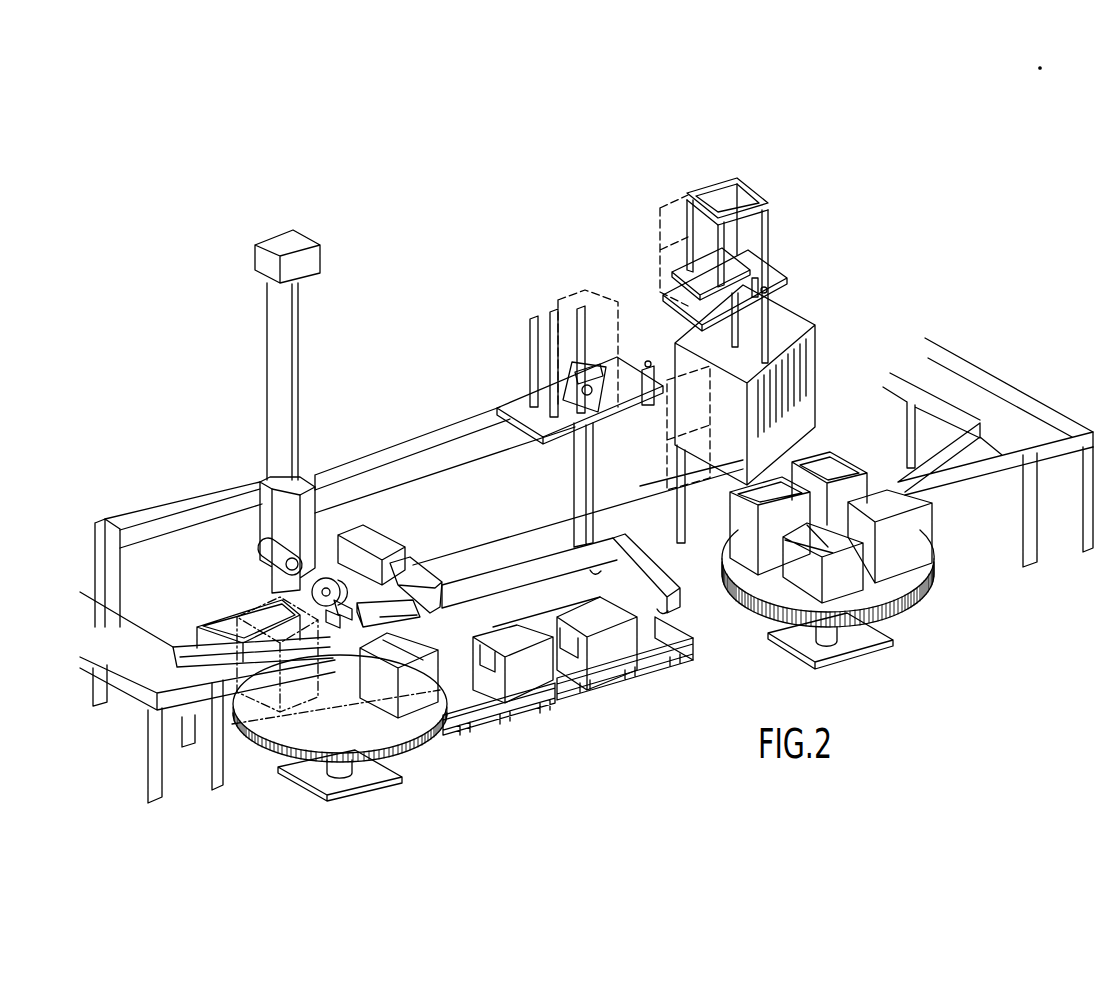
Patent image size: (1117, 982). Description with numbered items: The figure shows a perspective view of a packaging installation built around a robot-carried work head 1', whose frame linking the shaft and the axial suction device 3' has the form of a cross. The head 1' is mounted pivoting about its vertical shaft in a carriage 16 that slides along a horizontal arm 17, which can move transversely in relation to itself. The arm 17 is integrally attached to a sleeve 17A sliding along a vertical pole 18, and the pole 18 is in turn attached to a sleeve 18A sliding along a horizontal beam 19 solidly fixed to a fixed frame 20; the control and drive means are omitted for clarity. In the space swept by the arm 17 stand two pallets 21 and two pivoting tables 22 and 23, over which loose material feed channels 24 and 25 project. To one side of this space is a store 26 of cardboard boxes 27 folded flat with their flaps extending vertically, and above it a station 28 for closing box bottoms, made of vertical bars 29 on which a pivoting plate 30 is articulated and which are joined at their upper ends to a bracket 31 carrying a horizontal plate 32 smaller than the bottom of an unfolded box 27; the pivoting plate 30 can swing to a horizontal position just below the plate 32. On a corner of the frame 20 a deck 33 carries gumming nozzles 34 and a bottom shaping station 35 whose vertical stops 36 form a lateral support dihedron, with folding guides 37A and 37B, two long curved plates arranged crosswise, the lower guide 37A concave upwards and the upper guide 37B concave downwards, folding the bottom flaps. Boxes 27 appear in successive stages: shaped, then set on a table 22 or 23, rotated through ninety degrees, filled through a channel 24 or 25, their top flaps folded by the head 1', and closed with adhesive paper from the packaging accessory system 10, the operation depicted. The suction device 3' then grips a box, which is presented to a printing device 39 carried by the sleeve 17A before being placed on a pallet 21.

The work head 1' is at (418, 541).
The axial suction device 3' is at (415, 616).
The packaging accessory system 10 is at (320, 613).
The carriage 16 is at (367, 531).
The horizontal arm 17 is at (331, 506).
The sleeve 17A is at (258, 500).
The vertical pole 18 is at (299, 406).
The sleeve 18A is at (232, 612).
The horizontal beam 19 is at (488, 608).
The fixed frame 20 is at (572, 482).
The pallets 21 is at (548, 708).
The pivoting table 22 is at (395, 752).
The pivoting table 23 is at (845, 610).
The loose material feed channel 24 is at (224, 698).
The loose material feed channel 25 is at (962, 484).
The store 26 is at (830, 374).
The cardboard boxes 27 is at (278, 735).
The station for closing the bottoms of the boxes 28 is at (775, 274).
The vertical bars 29 is at (770, 246).
The pivoting plate 30 is at (680, 300).
The bracket 31 is at (735, 183).
The horizontal plate 32 is at (688, 272).
The deck 33 is at (636, 410).
The gumming nozzles 34 is at (646, 360).
The bottom shaping station 35 is at (525, 361).
The vertical stops 36 is at (535, 316).
The folding guide 37A is at (532, 389).
The folding guide 37B is at (556, 348).
The printing device 39 is at (260, 545).